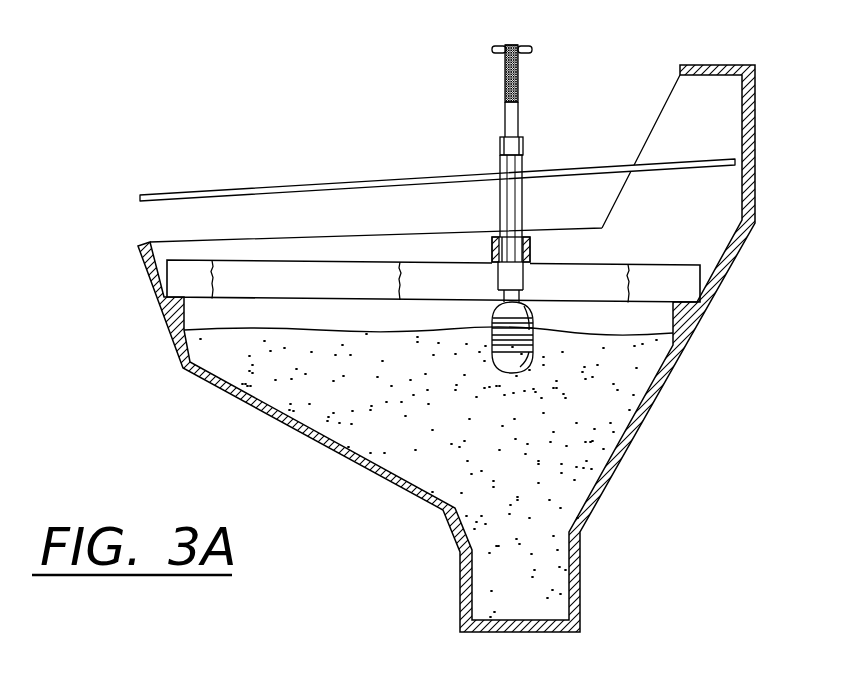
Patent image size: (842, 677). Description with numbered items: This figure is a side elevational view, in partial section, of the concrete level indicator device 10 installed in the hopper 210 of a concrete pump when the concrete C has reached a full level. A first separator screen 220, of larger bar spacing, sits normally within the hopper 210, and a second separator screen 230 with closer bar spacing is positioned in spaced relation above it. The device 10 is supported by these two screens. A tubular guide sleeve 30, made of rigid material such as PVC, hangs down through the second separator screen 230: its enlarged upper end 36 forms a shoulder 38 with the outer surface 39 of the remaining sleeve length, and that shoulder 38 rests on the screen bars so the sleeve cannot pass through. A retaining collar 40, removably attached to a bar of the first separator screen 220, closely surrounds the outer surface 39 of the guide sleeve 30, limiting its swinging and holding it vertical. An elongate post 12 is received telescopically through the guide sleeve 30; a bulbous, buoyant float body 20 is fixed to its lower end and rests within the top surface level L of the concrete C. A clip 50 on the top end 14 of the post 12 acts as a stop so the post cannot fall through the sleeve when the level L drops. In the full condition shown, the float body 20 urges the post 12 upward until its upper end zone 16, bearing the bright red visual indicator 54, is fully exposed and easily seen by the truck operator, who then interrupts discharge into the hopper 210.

The concrete level indicator device 10 is at (537, 186).
The elongate post 12 is at (505, 117).
The top end 14 is at (515, 45).
The upper end zone 16 is at (507, 62).
The float body 20 is at (492, 320).
The tubular guide sleeve 30 is at (512, 208).
The upper end 36 is at (524, 138).
The shoulder 38 is at (503, 160).
The outer surface 39 is at (515, 188).
The retaining collar 40 is at (520, 253).
The clip 50 is at (498, 45).
The visual indicator 54 is at (513, 80).
The hopper 210 is at (247, 396).
The first separator screen 220 is at (371, 265).
The second separator screen 230 is at (262, 188).
The top surface level L is at (315, 328).
The concrete C is at (392, 429).